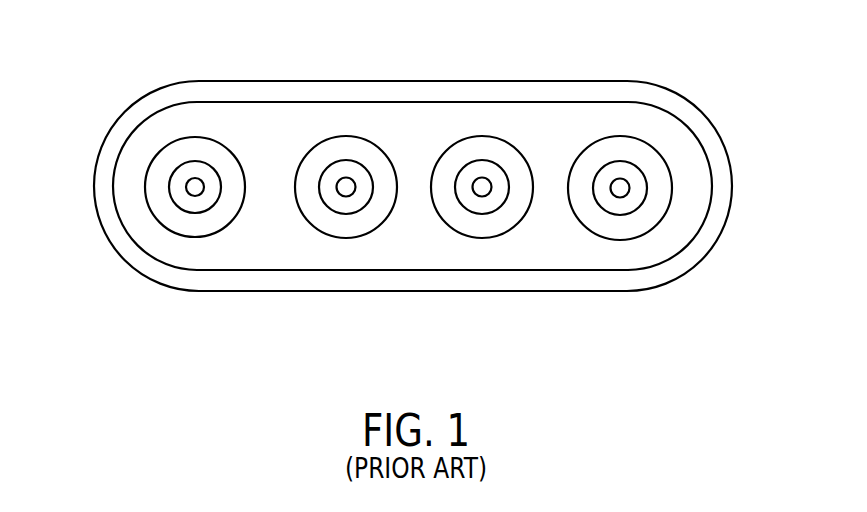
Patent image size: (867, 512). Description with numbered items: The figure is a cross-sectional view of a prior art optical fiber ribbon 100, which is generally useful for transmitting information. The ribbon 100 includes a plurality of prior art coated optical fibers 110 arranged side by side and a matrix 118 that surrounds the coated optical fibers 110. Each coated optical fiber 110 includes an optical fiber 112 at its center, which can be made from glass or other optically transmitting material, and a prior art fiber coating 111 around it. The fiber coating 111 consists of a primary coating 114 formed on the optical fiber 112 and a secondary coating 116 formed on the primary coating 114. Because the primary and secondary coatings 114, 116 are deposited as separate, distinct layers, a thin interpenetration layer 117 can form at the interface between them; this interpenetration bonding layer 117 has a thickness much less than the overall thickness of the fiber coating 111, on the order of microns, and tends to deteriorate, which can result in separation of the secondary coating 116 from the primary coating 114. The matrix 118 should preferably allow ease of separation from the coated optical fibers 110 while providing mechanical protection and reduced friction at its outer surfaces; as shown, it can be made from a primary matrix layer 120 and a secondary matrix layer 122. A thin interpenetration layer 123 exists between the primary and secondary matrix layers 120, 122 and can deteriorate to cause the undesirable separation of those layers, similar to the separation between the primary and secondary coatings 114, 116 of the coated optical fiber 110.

The optical fiber ribbon 100 is at (419, 204).
The coated optical fiber 110 is at (190, 175).
The fiber coating 111 is at (197, 131).
The optical fiber 112 is at (261, 253).
The primary coating 114 is at (127, 200).
The secondary coating 116 is at (140, 216).
The interpenetration layer 117 is at (168, 127).
The matrix 118 is at (483, 135).
The primary matrix layer 120 is at (451, 144).
The secondary matrix layer 122 is at (444, 186).
The interpenetration layer 123 is at (412, 144).